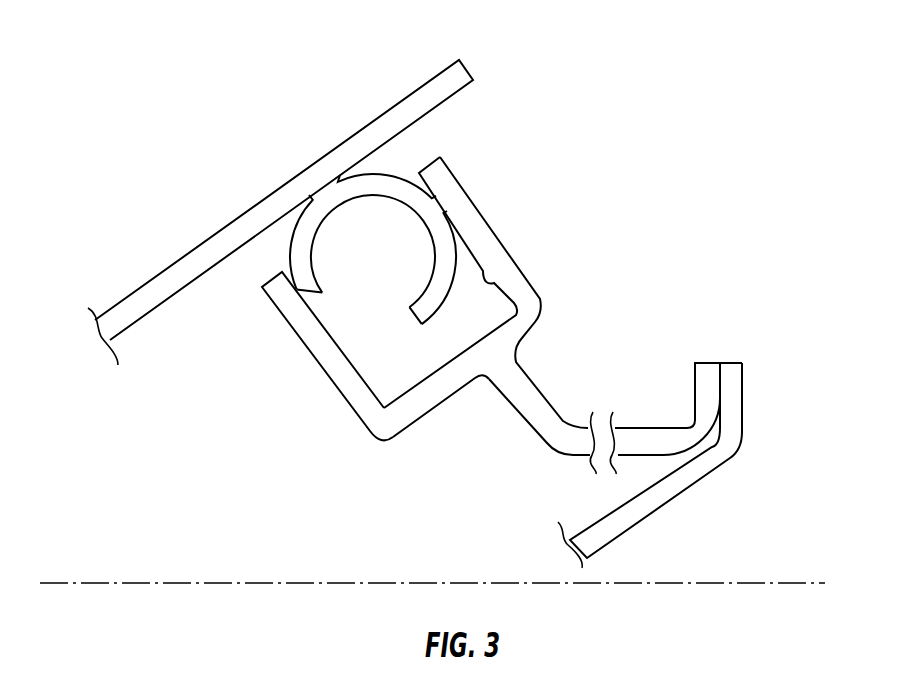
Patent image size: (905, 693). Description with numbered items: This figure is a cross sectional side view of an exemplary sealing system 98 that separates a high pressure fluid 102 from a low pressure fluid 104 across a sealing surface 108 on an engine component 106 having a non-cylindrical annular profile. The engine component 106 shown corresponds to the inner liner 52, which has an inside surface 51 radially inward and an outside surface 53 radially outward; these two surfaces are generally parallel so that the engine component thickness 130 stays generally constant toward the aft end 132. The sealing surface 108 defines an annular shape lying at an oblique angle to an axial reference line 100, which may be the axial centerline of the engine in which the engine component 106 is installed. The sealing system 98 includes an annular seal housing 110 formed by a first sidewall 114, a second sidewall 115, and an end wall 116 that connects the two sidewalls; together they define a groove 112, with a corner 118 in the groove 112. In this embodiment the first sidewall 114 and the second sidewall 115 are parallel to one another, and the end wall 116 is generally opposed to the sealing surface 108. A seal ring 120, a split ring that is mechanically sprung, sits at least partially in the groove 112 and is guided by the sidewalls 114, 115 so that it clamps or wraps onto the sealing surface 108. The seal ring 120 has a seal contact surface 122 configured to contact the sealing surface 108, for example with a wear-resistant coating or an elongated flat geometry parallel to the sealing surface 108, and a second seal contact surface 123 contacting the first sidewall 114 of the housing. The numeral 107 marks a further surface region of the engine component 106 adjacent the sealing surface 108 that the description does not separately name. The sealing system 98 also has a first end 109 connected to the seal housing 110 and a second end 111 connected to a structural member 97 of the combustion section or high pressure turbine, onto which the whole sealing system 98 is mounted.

The inside surface 51 is at (252, 248).
The inner liner 52 is at (160, 282).
The outside surface 53 is at (231, 215).
The structural member 97 is at (642, 514).
The sealing system 98 is at (203, 115).
The axial reference line 100 is at (183, 580).
The high pressure fluid 102 is at (202, 476).
The low pressure fluid 104 is at (550, 97).
The engine component 106 is at (137, 300).
The contact surface 107 is at (314, 190).
The sealing surface 108 is at (225, 266).
The first end 109 is at (553, 437).
The seal housing 110 is at (457, 397).
The second end 111 is at (645, 427).
The groove 112 is at (458, 322).
The first sidewall 114 is at (485, 272).
The second sidewall 115 is at (333, 333).
The end wall 116 is at (422, 380).
The corner 118 is at (383, 405).
The seal ring 120 is at (396, 178).
The seal contact surface 122 is at (343, 170).
The second seal contact surface 123 is at (430, 214).
The engine component thickness 130 is at (474, 113).
The aft end 132 is at (473, 70).